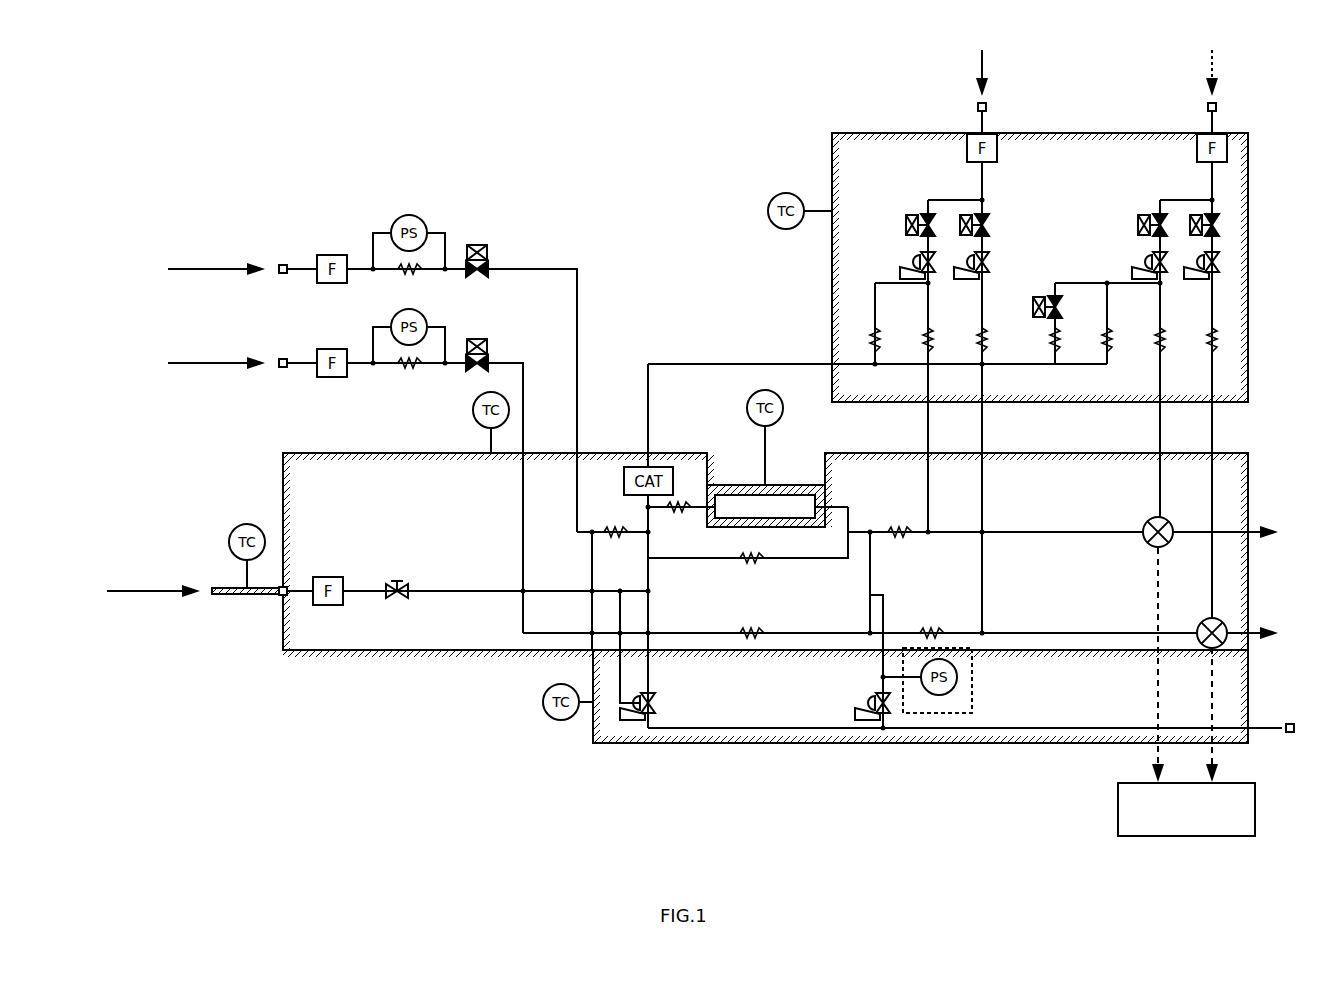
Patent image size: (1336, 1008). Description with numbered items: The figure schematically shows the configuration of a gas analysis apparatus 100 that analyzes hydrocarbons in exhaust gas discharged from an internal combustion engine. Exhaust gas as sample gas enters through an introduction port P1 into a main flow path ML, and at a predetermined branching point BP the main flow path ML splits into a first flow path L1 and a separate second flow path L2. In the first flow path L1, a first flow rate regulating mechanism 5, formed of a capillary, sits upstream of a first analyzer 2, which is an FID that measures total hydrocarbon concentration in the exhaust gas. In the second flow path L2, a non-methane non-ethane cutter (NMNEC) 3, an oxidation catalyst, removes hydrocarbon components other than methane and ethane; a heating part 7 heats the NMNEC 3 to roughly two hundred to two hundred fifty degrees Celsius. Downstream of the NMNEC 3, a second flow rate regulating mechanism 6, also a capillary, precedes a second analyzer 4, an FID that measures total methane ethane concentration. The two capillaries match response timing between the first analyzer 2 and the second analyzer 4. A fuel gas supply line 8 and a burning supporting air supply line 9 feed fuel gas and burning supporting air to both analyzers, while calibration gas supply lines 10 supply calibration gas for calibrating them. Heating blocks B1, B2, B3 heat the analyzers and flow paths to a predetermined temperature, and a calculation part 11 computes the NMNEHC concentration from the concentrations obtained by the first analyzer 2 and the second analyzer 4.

The gas analysis apparatus 100 is at (462, 120).
The calibration gas supply lines 10 is at (540, 266).
The fuel gas supply line 8 is at (978, 183).
The burning supporting air supply line 9 is at (1208, 183).
The heating part 7 is at (746, 484).
The non-methane non-ethane cutter (NMNEC) 3 is at (785, 494).
The second flow rate regulating mechanism 6 is at (615, 528).
The first flow rate regulating mechanism 5 is at (752, 627).
The second analyzer 4 is at (1146, 521).
The first analyzer 2 is at (1205, 648).
The calculation part 11 is at (1116, 800).
The first flow path L1 is at (1082, 628).
The second flow path L2 is at (1037, 537).
The branching point BP is at (587, 587).
The main flow path ML is at (461, 587).
The introduction port P1 is at (278, 598).
The heating block B1 is at (398, 655).
The heating block B2 is at (748, 747).
The heating block B3 is at (830, 282).